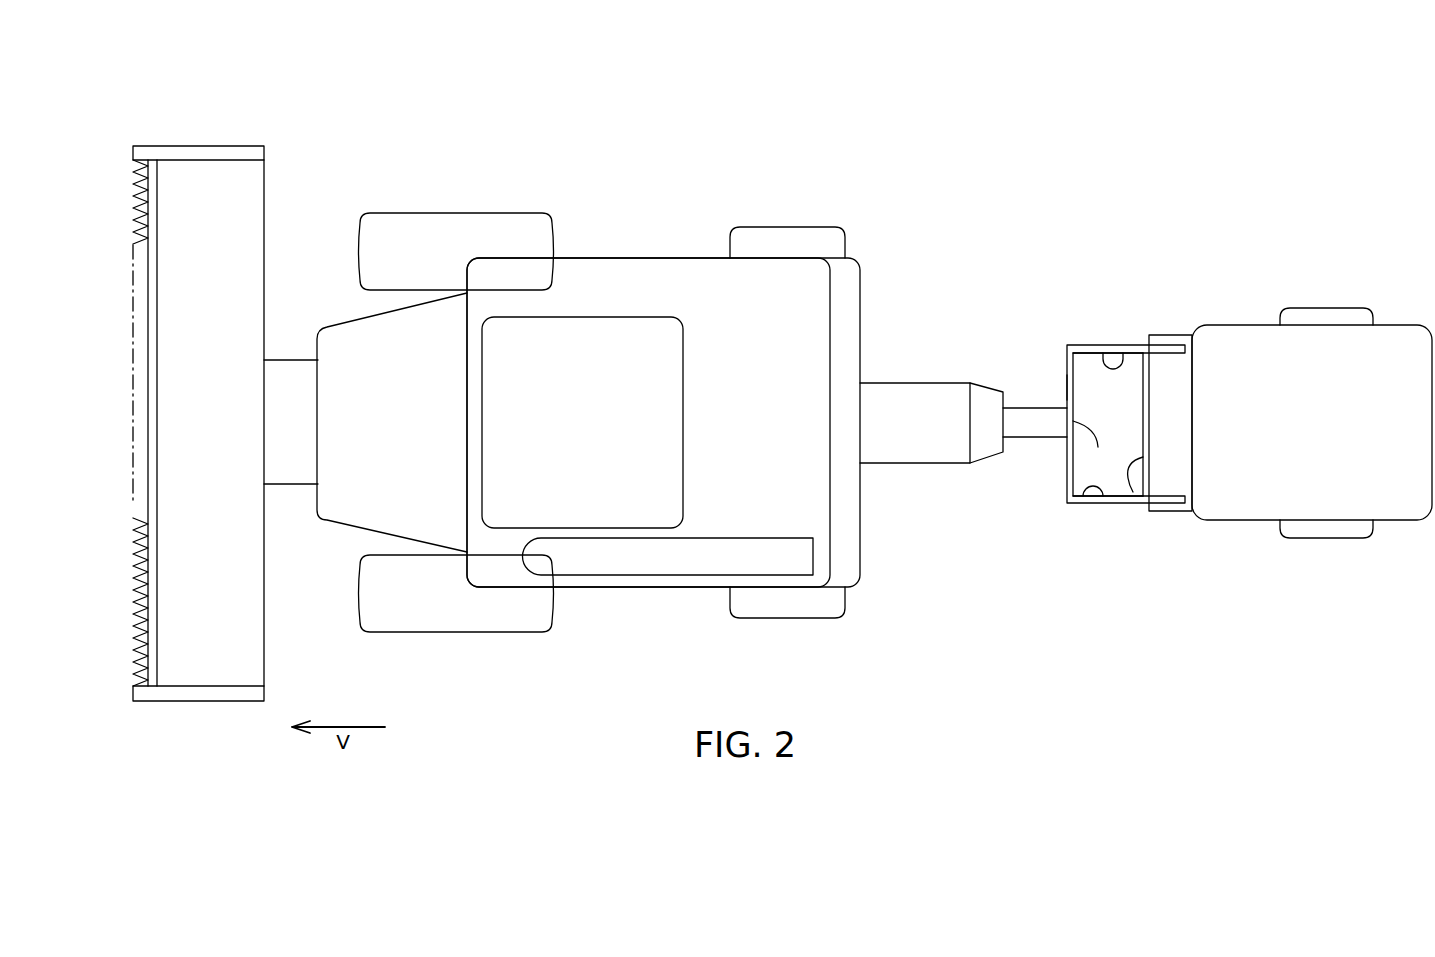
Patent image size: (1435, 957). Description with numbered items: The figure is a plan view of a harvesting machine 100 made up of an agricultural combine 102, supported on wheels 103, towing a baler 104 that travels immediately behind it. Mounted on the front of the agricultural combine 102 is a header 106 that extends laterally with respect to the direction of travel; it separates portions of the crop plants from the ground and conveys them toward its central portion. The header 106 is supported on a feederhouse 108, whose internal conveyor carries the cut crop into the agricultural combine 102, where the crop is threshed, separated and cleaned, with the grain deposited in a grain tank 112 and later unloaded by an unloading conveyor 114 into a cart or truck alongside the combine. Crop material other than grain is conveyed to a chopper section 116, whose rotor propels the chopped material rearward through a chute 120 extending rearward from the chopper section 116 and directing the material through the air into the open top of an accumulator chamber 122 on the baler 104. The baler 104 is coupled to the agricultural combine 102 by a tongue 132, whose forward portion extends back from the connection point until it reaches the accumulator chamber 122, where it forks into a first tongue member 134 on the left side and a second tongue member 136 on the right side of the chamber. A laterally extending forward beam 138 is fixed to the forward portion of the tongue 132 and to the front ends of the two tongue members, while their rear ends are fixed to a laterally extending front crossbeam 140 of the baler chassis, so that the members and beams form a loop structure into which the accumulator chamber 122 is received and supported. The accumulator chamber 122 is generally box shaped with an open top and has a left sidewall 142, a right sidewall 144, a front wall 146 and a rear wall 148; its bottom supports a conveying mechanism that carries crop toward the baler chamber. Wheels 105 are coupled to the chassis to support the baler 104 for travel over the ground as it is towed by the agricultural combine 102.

The harvesting machine 100 is at (943, 136).
The agricultural combine 102 is at (610, 201).
The wheels 103 is at (413, 215).
The baler 104 is at (1253, 283).
The wheels 105 is at (1318, 310).
The header 106 is at (223, 150).
The feederhouse 108 is at (290, 365).
The grain tank 112 is at (637, 320).
The unloading conveyor 114 is at (650, 576).
The chopper section 116 is at (890, 322).
The chute 120 is at (944, 383).
The accumulator chamber 122 is at (1092, 375).
The tongue 132 is at (1025, 440).
The first tongue member 134 is at (1117, 493).
The second tongue member 136 is at (1120, 352).
The laterally extending forward beam 138 is at (1070, 383).
The front crossbeam 140 is at (1152, 388).
The left sidewall 142 is at (1085, 480).
The right sidewall 144 is at (1106, 353).
The front wall 146 is at (1098, 447).
The rear wall 148 is at (1133, 492).